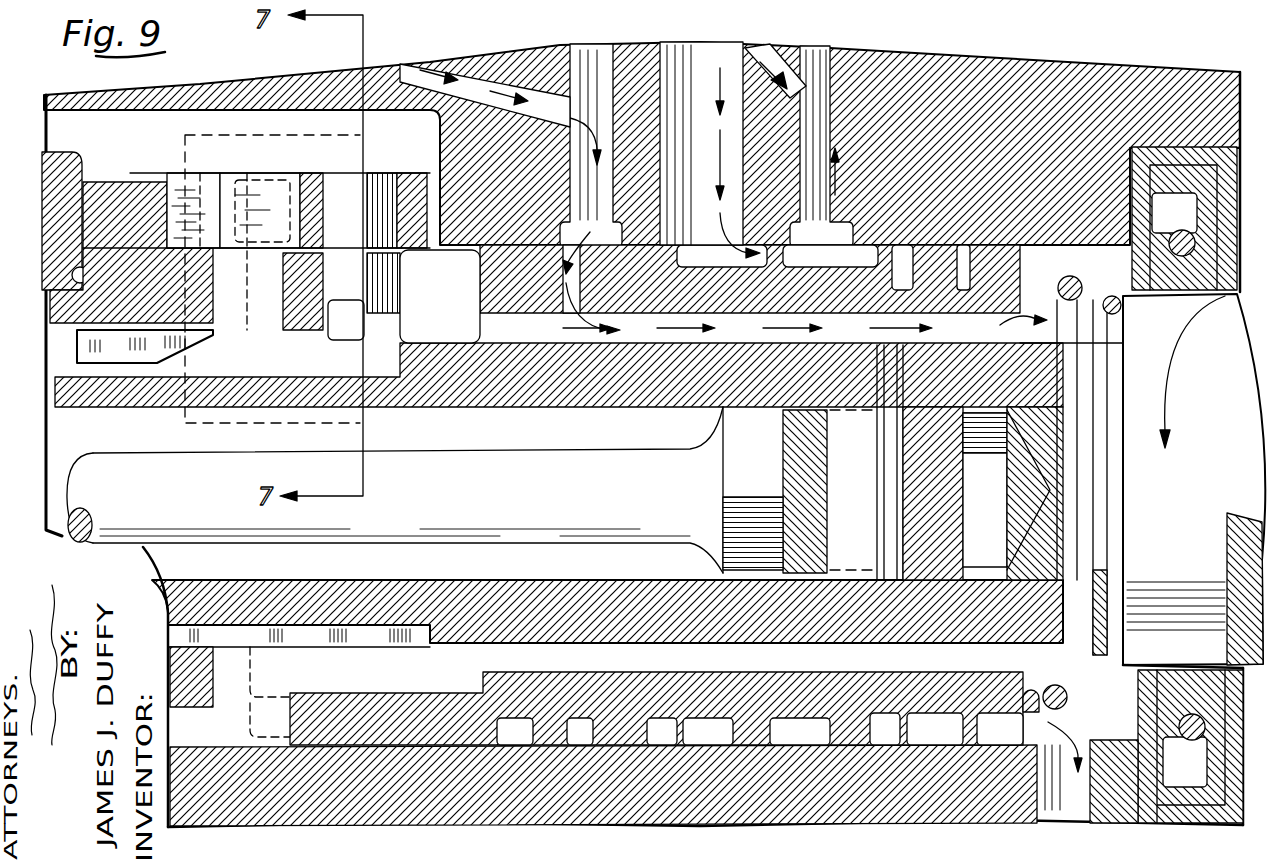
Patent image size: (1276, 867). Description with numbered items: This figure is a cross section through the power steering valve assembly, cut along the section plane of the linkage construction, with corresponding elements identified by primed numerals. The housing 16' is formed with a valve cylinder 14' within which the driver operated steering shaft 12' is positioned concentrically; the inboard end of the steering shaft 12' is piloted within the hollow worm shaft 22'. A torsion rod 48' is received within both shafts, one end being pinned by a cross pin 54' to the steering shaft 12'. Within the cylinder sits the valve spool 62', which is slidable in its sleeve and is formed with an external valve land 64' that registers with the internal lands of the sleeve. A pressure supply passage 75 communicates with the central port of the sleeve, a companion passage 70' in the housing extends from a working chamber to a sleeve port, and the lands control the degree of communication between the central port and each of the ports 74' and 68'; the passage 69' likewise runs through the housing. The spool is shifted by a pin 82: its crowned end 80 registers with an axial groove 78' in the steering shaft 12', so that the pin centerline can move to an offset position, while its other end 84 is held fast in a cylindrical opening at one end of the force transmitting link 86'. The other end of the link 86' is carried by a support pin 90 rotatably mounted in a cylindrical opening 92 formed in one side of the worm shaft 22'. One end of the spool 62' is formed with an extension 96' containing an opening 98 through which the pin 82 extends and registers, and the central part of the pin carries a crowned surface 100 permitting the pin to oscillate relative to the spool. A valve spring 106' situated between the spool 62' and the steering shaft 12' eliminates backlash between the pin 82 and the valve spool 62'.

The housing 16' is at (643, 435).
The valve cylinder 14' is at (700, 386).
The steering shaft 12' is at (1165, 485).
The inlet passage 69' is at (485, 69).
The pressure supply passage 75 is at (740, 52).
The companion passage 70' is at (793, 49).
The port 74' is at (723, 288).
The valve port 68' is at (559, 586).
The torsion rod 48' is at (402, 490).
The cross pin 54' is at (813, 462).
The worm shaft 22' is at (81, 218).
The end of pin 84 is at (160, 182).
The pin 82 is at (172, 160).
The force transmitting link 86' is at (252, 188).
The opening 98 is at (338, 262).
The support pin 90 is at (380, 172).
The cylindrical opening 92 is at (437, 220).
The crowned surface 100 is at (472, 257).
The extension 96' is at (170, 349).
The axial groove 78' is at (284, 352).
The end of pin 80 is at (347, 337).
The external valve land 64' is at (591, 787).
The valve spool 62' is at (708, 787).
The valve spring 106' is at (1073, 703).